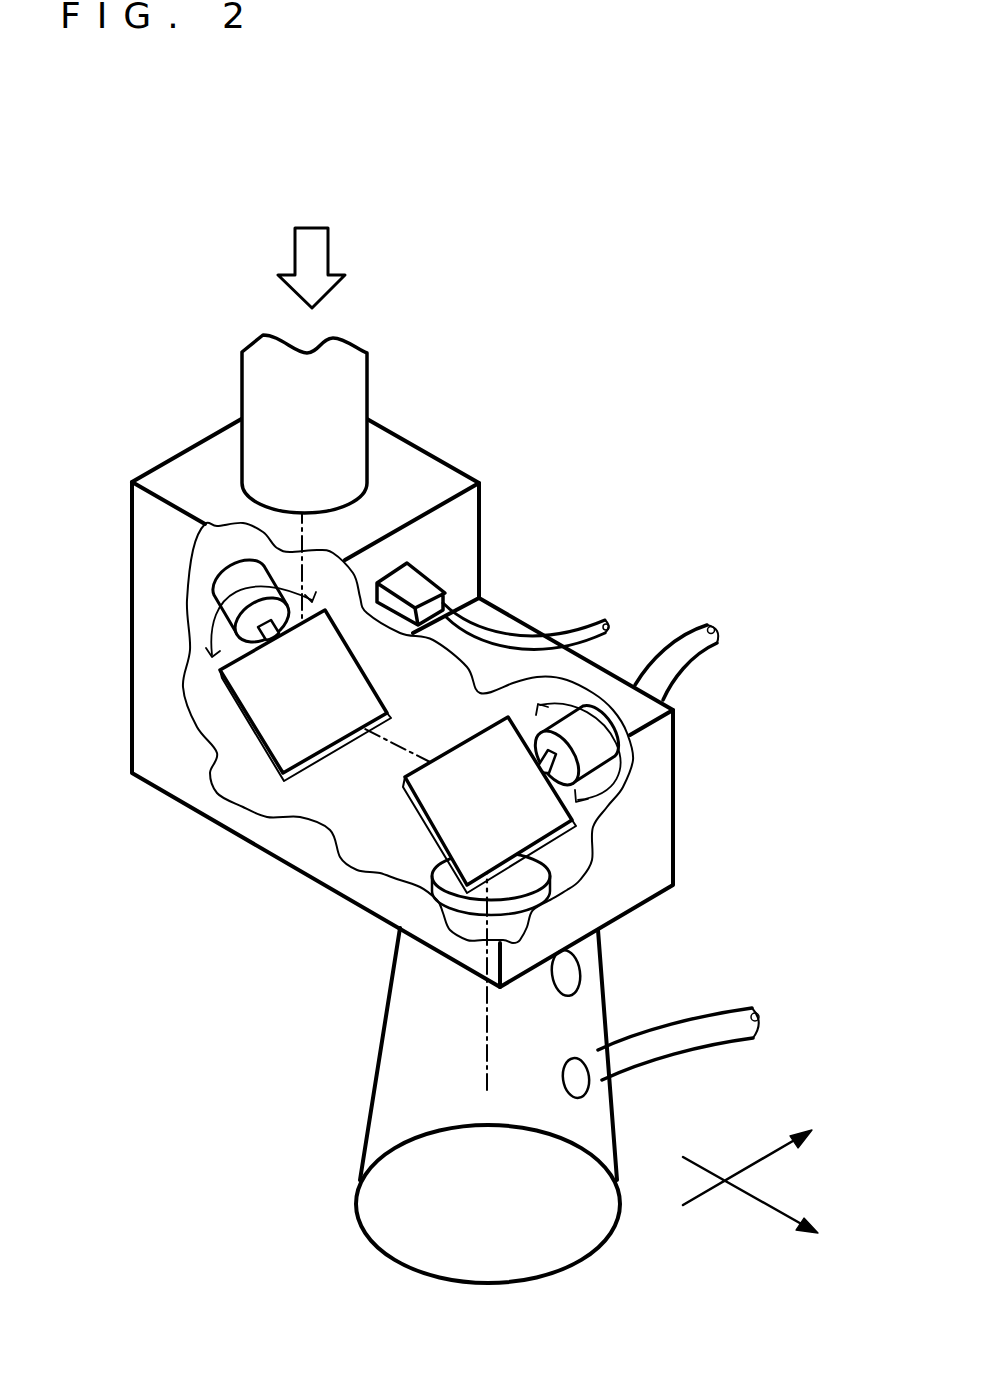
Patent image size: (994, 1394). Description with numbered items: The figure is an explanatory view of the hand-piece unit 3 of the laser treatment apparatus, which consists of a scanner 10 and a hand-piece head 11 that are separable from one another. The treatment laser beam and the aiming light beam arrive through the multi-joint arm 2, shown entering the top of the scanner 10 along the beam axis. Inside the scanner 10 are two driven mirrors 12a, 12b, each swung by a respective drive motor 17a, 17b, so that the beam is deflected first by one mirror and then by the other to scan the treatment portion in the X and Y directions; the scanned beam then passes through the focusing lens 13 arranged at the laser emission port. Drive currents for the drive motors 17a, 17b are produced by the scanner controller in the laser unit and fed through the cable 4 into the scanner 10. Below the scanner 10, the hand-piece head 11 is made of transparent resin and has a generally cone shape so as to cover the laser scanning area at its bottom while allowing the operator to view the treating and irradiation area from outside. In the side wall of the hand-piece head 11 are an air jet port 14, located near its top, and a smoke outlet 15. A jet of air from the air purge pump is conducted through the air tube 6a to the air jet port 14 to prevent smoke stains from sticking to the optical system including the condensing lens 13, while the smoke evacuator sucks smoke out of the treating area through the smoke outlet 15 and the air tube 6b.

The multi-joint arm 2 is at (348, 436).
The hand-piece unit 3 is at (557, 498).
The cable 4 is at (563, 630).
The air tube 6a is at (673, 653).
The air tube 6b is at (707, 1027).
The scanner 10 is at (145, 730).
The hand-piece head 11 is at (410, 1018).
The driven mirror 12a is at (267, 715).
The driven mirror 12b is at (443, 812).
The focusing lens 13 is at (523, 878).
The air jet port 14 is at (565, 977).
The smoke outlet 15 is at (580, 1082).
The drive motor 17a is at (230, 573).
The drive motor 17b is at (607, 750).